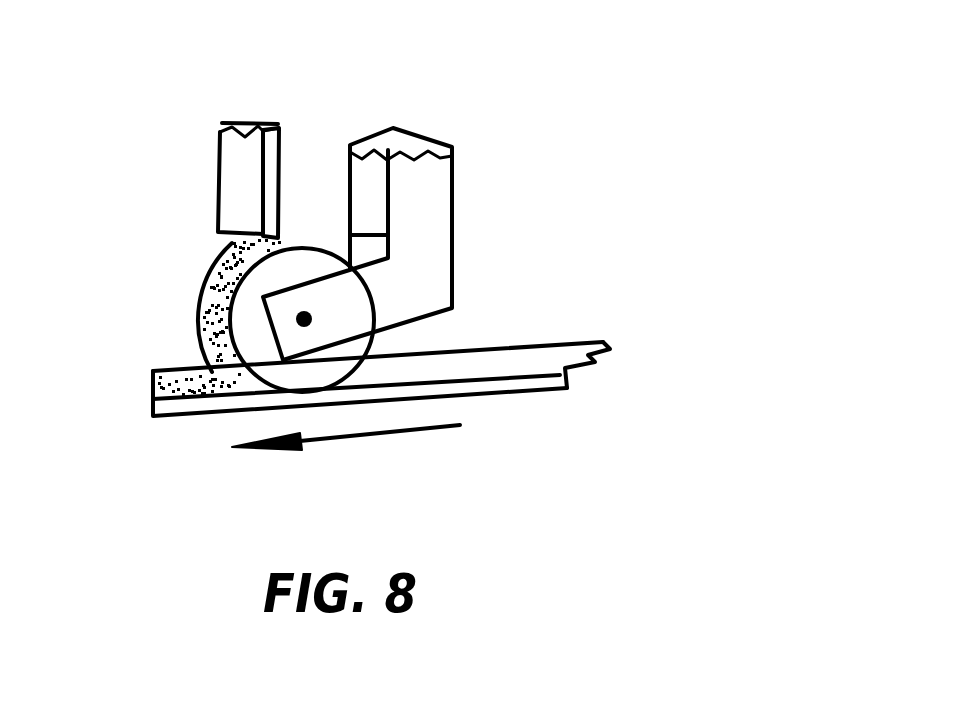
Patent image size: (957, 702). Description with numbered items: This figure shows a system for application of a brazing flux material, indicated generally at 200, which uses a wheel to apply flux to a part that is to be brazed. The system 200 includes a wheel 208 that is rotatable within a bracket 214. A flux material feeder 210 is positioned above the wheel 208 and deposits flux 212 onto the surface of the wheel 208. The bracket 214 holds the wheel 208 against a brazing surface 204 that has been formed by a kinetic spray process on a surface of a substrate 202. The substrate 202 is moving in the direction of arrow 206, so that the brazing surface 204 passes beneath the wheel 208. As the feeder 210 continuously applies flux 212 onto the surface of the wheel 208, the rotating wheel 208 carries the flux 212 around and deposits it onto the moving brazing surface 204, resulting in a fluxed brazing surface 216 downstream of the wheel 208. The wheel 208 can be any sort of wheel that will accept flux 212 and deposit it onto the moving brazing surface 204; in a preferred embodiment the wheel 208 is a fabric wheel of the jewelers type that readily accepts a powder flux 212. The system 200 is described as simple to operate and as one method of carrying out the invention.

The system for application of a brazing flux material 200 is at (543, 157).
The substrate 202 is at (612, 340).
The brazing surface 204 is at (500, 358).
The arrow 206 is at (413, 434).
The wheel 208 is at (295, 245).
The flux material feeder 210 is at (209, 124).
The brazing flux material 212 is at (210, 286).
The bracket 214 is at (456, 130).
The fluxed brazing surface 216 is at (167, 368).